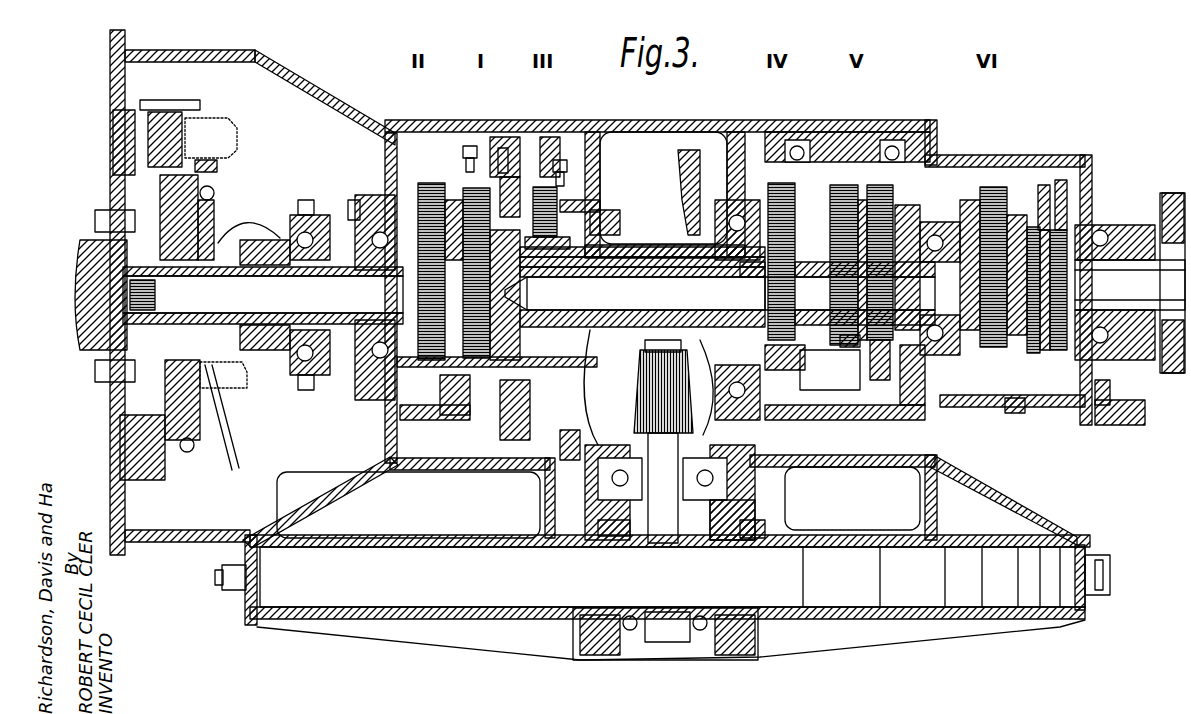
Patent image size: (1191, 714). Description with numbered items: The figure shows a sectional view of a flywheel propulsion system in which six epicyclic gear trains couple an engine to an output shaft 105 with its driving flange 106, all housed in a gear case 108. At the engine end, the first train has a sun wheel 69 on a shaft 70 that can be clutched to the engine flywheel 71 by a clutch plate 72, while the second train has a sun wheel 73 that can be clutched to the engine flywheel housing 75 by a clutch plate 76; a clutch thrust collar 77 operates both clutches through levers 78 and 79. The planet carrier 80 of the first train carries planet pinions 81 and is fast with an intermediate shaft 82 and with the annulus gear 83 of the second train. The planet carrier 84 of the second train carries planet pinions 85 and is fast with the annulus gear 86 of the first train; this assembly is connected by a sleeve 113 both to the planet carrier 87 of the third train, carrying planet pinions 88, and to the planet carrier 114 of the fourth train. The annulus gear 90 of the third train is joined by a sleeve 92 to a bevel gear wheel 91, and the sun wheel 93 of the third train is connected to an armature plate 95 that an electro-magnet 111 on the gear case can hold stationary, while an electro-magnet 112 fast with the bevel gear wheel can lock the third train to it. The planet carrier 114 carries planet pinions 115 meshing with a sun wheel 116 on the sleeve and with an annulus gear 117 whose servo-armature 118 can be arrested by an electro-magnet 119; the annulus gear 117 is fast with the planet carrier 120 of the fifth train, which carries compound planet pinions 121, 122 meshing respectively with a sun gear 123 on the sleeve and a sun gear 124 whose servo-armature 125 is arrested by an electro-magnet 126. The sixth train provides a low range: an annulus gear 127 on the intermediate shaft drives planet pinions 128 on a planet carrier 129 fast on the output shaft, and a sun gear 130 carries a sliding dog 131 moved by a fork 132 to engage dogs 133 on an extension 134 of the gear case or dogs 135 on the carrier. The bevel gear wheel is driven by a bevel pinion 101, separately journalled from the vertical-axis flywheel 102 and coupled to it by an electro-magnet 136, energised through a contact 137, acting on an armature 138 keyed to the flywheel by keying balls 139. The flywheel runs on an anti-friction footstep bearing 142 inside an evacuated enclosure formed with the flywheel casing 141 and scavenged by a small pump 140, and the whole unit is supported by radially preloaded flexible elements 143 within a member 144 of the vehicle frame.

The sun wheel 69 is at (533, 293).
The shaft 70 is at (263, 295).
The engine flywheel 71 is at (112, 180).
The clutch plate 72 is at (168, 112).
The sun wheel 73 is at (462, 290).
The engine flywheel housing 75 is at (217, 168).
The clutch plate 76 is at (214, 192).
The clutch thrust collar 77 is at (248, 368).
The lever 78 is at (237, 425).
The lever 79 is at (262, 222).
The planet carrier 80 is at (494, 362).
The planet pinions 81 is at (506, 150).
The intermediate shaft 82 is at (642, 302).
The annulus gear 83 is at (452, 198).
The planet carrier 84 is at (382, 195).
The planet pinions 85 is at (428, 184).
The annulus gear 86 is at (500, 137).
The planet carrier 87 is at (618, 218).
The planet pinions 88 is at (560, 205).
The annulus gear 90 is at (598, 180).
The bevel gear wheel 91 is at (688, 152).
The sleeve 92 is at (662, 267).
The sun wheel 93 is at (592, 277).
The armature plate 95 is at (527, 452).
The bevel pinion 101 is at (704, 425).
The flywheel 102 is at (672, 577).
The output shaft 105 is at (1130, 260).
The driving flange 106 is at (1168, 193).
The gear case 108 is at (712, 125).
The electro-magnet 111 is at (510, 175).
The electro-magnet 112 is at (552, 137).
The sleeve 113 is at (698, 257).
The planet carrier 114 is at (838, 369).
The planet pinions 115 is at (765, 262).
The sun wheel 116 is at (800, 310).
The annulus gear 117 is at (750, 195).
The servo-armature 118 is at (805, 140).
The electro-magnet 119 is at (845, 185).
The planet carrier 120 is at (880, 185).
The compound planet pinion 121 is at (950, 165).
The compound planet pinion 122 is at (980, 200).
The sun gear 123 is at (855, 337).
The sun gear 124 is at (887, 352).
The servo-armature 125 is at (915, 140).
The electro-magnet 126 is at (940, 145).
The annulus gear 127 is at (1003, 175).
The planet pinions 128 is at (1035, 215).
The planet carrier 129 is at (1040, 185).
The sun gear 130 is at (960, 370).
The sliding dog 131 is at (1045, 352).
The fork 132 is at (1062, 178).
The dogs 133 is at (1080, 365).
The extension 134 is at (1042, 407).
The dogs 135 is at (1016, 415).
The electro-magnet 136 is at (755, 545).
The contact 137 is at (658, 352).
The armature 138 is at (735, 545).
The keying balls 139 is at (620, 540).
The pump 140 is at (663, 660).
The flywheel casing 141 is at (822, 605).
The anti-friction footstep bearing 142 is at (690, 612).
The flexible elements 143 is at (1112, 427).
The member of the vehicle frame 144 is at (1125, 432).